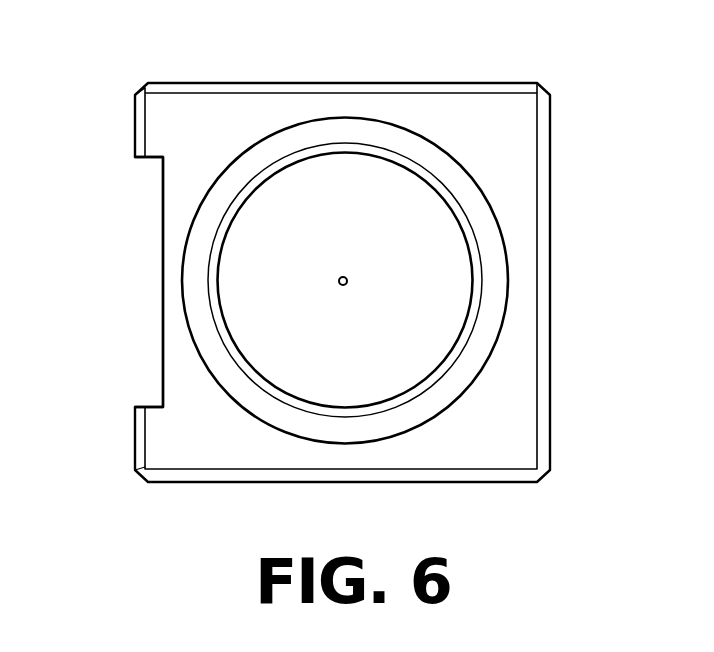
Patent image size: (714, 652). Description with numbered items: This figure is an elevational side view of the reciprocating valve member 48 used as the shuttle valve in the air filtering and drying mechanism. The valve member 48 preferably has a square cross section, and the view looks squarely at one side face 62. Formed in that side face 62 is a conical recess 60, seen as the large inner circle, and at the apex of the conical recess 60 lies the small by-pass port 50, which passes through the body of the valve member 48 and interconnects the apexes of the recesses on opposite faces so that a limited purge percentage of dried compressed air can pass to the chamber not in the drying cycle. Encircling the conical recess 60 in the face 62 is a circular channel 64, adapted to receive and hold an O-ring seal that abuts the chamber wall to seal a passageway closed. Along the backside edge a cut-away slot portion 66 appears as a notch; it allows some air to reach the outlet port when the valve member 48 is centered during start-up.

The reciprocating valve member 48 is at (473, 83).
The side face 62 is at (241, 107).
The circular channel 64 is at (483, 202).
The conical recess 60 is at (351, 180).
The by-pass port 50 is at (349, 282).
The cut-away slot portion 66 is at (153, 281).